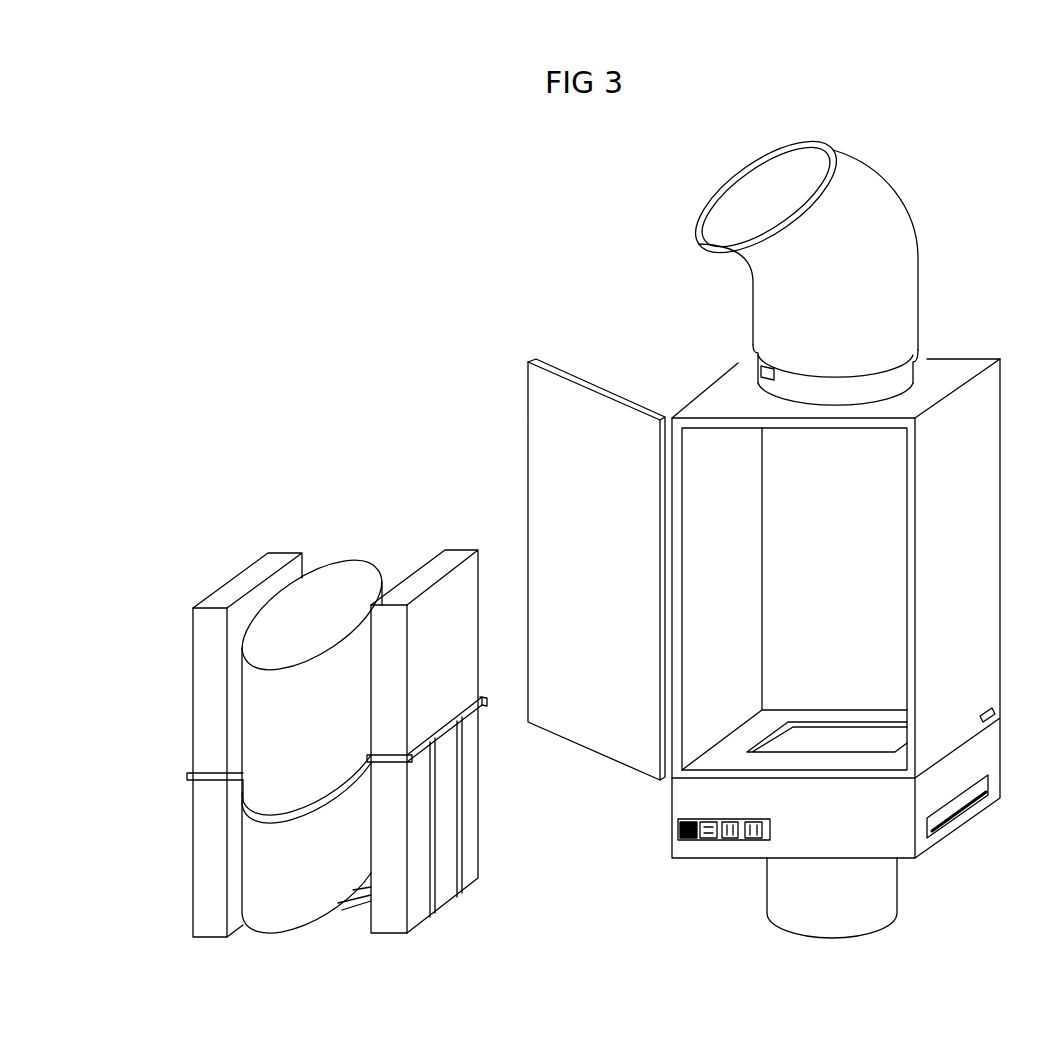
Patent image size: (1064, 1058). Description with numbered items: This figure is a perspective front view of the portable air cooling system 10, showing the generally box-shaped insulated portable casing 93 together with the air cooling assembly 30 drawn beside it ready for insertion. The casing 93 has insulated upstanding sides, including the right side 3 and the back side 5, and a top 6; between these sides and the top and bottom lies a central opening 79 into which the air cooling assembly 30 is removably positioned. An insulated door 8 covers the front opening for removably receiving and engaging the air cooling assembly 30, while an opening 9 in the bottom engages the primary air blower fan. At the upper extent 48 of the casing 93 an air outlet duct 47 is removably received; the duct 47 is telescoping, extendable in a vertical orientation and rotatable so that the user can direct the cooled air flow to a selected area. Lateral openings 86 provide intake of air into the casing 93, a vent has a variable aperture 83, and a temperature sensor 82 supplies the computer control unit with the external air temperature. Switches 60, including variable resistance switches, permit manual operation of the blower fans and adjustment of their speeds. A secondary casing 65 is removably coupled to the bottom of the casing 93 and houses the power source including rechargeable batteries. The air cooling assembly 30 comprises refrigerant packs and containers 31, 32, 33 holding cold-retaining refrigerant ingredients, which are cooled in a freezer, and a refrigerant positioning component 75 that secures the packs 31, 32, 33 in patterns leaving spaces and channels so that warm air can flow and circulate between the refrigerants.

The air treatment apparatus 10 is at (613, 185).
The right upstanding side 3 is at (992, 598).
The back upstanding side 5 is at (1010, 768).
The top 6 is at (978, 365).
The insulated door 8 is at (543, 730).
The opening 9 is at (870, 738).
The air cooling assembly 30 is at (355, 478).
The refrigerant pack and container 31 is at (453, 558).
The refrigerant pack and container 32 is at (352, 563).
The refrigerant pack and container 33 is at (202, 666).
The air outlet duct 47 is at (918, 270).
The upper extent 48 is at (908, 372).
The switches 60 is at (677, 828).
The secondary casing 65 is at (898, 880).
The refrigerant positioning component 75 is at (447, 868).
The central opening 79 is at (836, 595).
The temperature sensor 82 is at (995, 713).
The variable aperture 83 is at (753, 363).
The lateral openings 86 is at (988, 803).
The insulated portable casing 93 is at (992, 443).